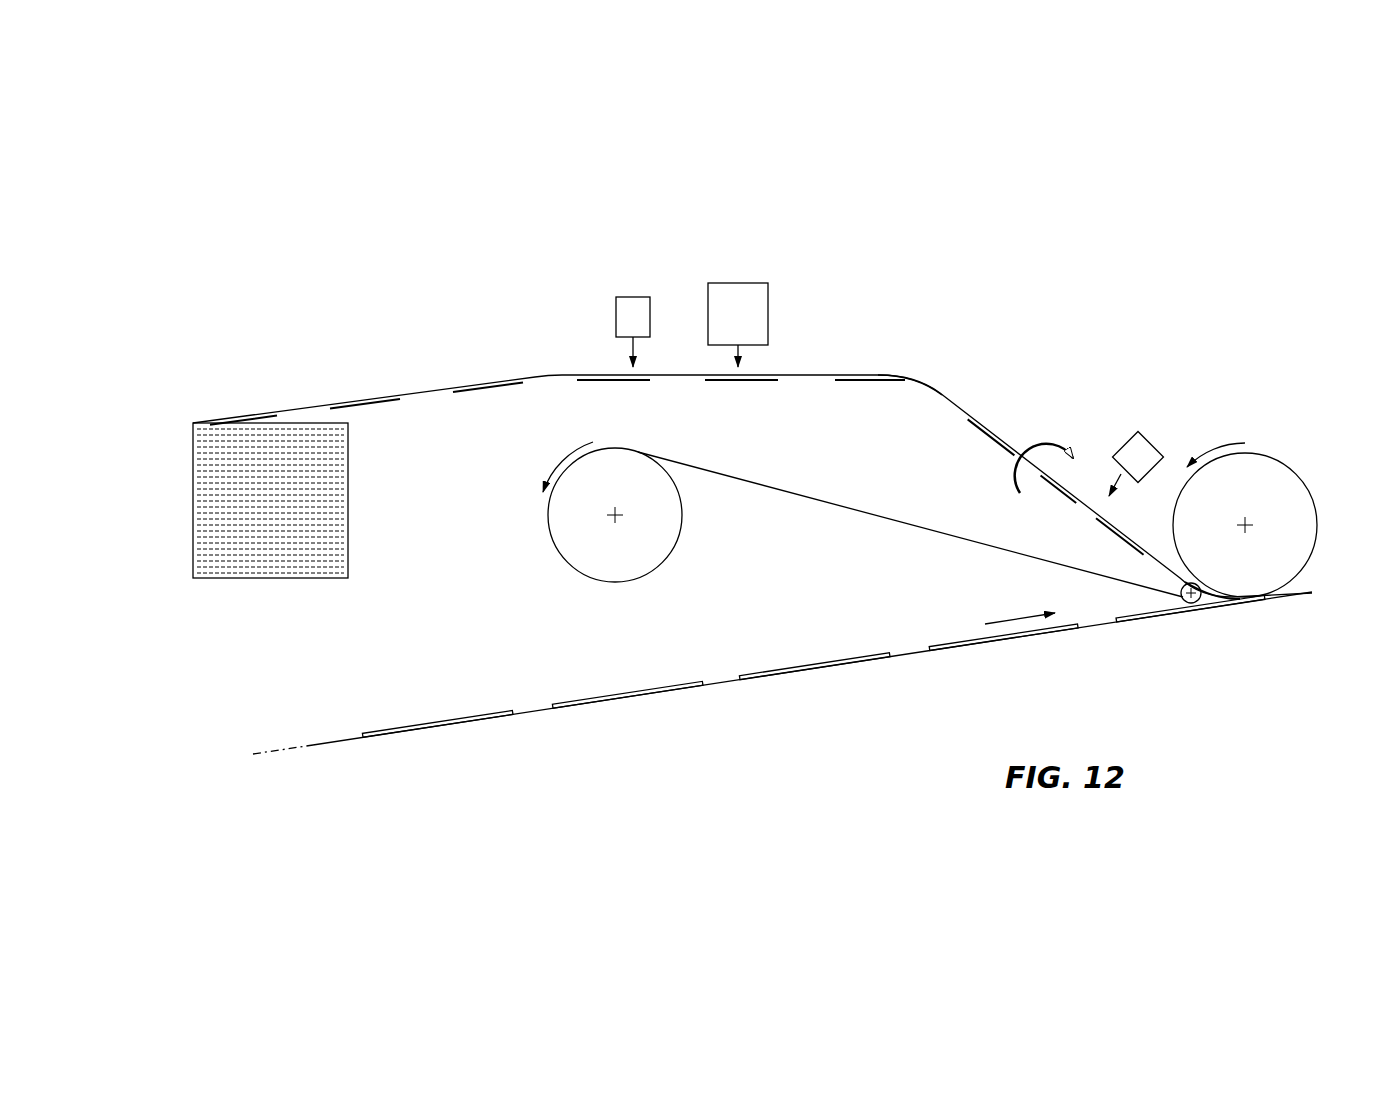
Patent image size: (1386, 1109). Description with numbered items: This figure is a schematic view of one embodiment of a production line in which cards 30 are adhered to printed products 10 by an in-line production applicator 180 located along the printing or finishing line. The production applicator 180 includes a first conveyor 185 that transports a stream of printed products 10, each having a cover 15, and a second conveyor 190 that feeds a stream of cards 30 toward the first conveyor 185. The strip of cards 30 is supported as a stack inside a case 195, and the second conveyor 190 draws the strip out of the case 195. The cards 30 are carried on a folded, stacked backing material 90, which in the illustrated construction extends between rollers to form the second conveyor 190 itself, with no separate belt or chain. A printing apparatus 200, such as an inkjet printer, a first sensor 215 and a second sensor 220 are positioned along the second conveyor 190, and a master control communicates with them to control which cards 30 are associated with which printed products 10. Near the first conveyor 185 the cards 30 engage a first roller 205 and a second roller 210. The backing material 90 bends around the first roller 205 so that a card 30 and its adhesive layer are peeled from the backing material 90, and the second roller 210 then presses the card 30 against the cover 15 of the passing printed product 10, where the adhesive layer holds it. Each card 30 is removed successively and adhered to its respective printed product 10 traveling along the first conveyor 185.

The printed product 10 is at (578, 690).
The cover 15 is at (413, 725).
The card 30 is at (255, 405).
The backing material 90 is at (548, 375).
The production applicator 180 is at (1127, 280).
The first conveyor 185 is at (536, 720).
The second conveyor 190 is at (940, 388).
The case 195 is at (193, 492).
The printing apparatus 200 is at (768, 318).
The first roller 205 is at (1186, 602).
The second roller 210 is at (1300, 477).
The first sensor 215 is at (633, 296).
The second sensor 220 is at (1125, 433).